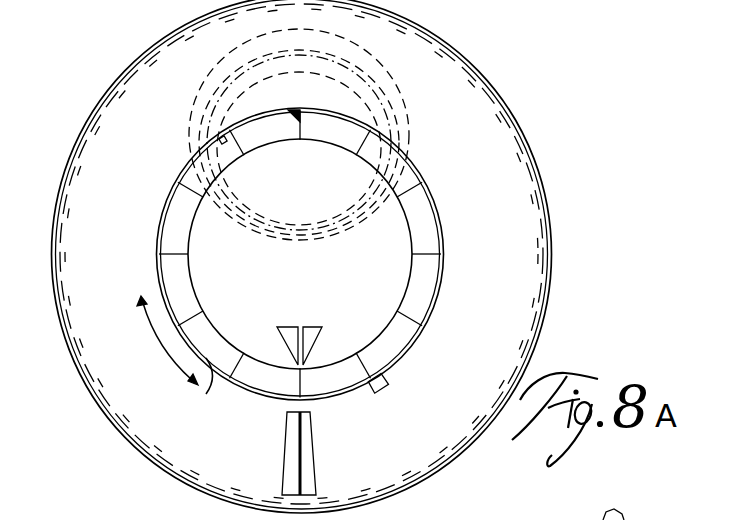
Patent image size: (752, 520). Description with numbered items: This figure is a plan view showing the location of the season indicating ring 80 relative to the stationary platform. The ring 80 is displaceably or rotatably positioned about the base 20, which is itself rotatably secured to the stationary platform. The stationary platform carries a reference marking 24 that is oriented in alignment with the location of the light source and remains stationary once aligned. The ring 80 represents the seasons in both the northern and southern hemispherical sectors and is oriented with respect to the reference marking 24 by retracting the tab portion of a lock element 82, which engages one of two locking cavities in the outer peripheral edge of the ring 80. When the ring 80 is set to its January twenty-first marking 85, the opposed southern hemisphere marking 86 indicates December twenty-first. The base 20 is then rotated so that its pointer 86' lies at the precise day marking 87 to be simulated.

The base 20 is at (397, 100).
The reference marking 24 is at (287, 470).
The season indicating ring 80 is at (209, 392).
The lock element 82 is at (386, 388).
The marking 85 is at (302, 385).
The marking 86 is at (283, 101).
The pointer 86' is at (288, 322).
The day marking 87 is at (242, 353).